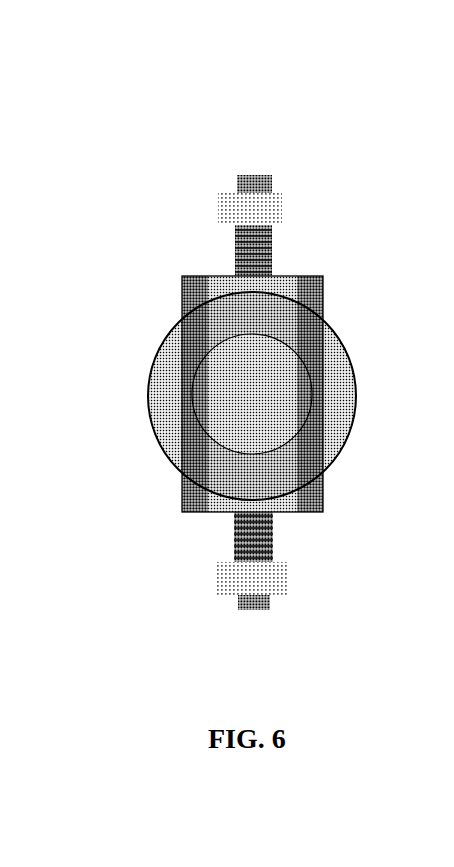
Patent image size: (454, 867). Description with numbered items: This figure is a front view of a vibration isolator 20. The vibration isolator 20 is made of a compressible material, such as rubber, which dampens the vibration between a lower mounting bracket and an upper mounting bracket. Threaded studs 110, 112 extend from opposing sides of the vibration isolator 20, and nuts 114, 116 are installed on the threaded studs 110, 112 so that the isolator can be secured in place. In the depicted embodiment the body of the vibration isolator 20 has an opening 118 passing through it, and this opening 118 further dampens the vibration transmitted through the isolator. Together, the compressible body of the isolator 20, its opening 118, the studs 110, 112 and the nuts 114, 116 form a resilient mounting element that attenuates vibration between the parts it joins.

The vibration isolator 20 is at (63, 80).
The threaded stud 110 is at (258, 170).
The threaded stud 112 is at (258, 608).
The nut 114 is at (285, 208).
The nut 116 is at (208, 582).
The opening 118 is at (278, 418).